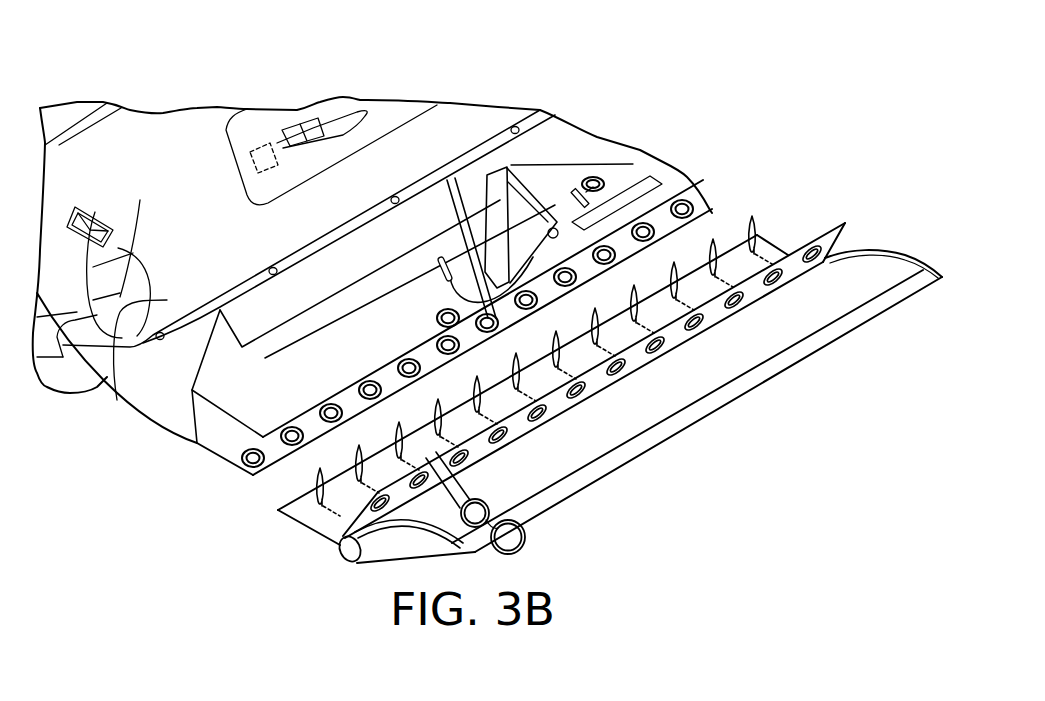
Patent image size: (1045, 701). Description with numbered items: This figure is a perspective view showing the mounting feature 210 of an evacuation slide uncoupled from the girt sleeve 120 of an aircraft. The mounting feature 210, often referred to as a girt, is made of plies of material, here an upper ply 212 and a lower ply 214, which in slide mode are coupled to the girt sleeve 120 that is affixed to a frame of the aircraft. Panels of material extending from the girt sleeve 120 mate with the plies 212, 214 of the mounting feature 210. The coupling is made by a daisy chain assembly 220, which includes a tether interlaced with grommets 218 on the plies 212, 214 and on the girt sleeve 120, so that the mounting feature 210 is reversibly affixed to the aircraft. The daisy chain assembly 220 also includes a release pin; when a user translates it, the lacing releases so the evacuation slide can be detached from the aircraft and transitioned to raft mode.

The girt sleeve 120 is at (842, 273).
The mounting feature 210 is at (651, 137).
The upper ply 212 is at (117, 394).
The lower ply 214 is at (257, 408).
The grommets 218 is at (645, 228).
The daisy chain assembly 220 is at (511, 165).